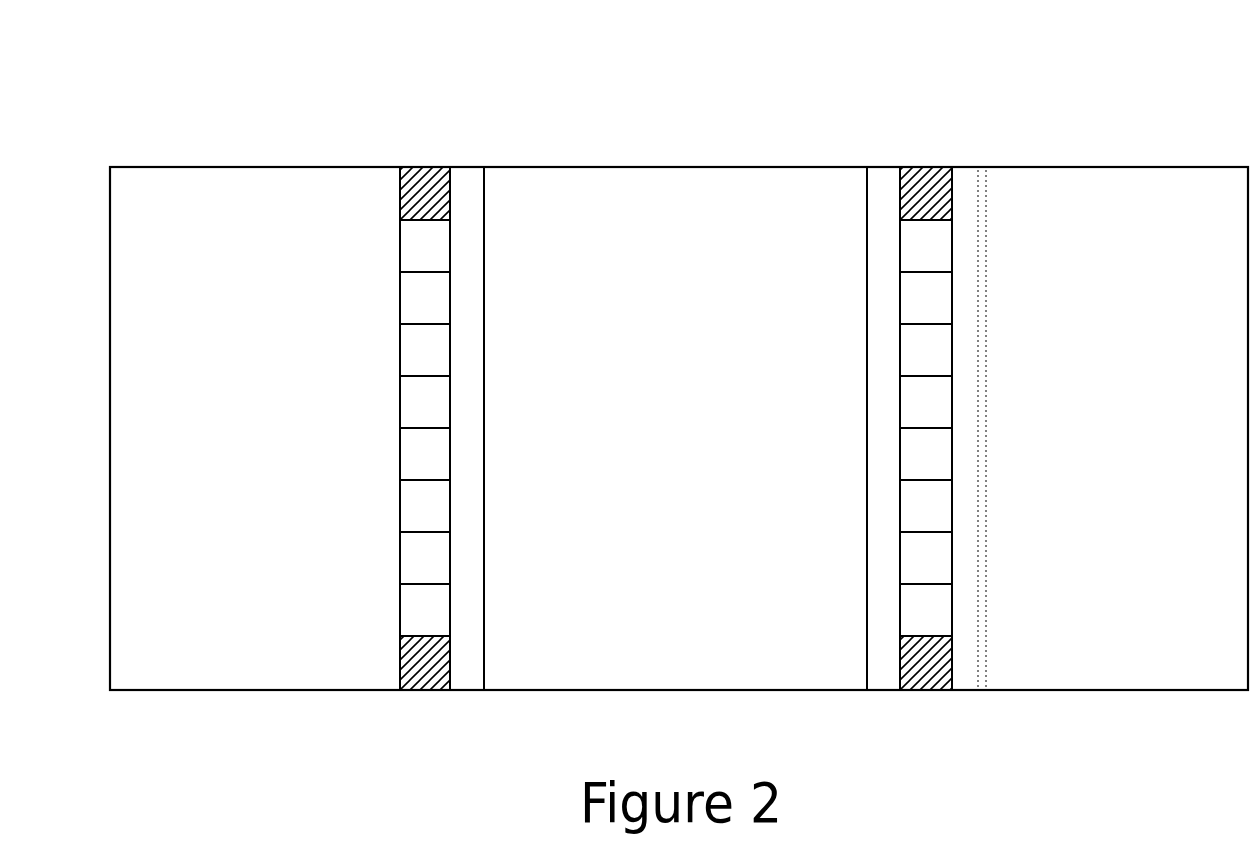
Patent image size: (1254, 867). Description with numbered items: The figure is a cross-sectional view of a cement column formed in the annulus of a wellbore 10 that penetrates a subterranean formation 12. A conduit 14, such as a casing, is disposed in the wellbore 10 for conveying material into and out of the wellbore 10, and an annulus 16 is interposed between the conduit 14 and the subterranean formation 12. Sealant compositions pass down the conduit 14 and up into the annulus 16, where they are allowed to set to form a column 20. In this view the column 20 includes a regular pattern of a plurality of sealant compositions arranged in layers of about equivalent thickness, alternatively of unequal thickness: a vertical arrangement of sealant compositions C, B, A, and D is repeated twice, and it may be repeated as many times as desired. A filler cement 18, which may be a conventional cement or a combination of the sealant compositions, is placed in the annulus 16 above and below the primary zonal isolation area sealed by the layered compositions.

The wellbore 10 is at (622, 145).
The subterranean formation 12 is at (290, 463).
The conduit 14 is at (467, 167).
The annulus 16 is at (355, 195).
The filler cement 18 is at (400, 210).
The column 20 is at (357, 380).